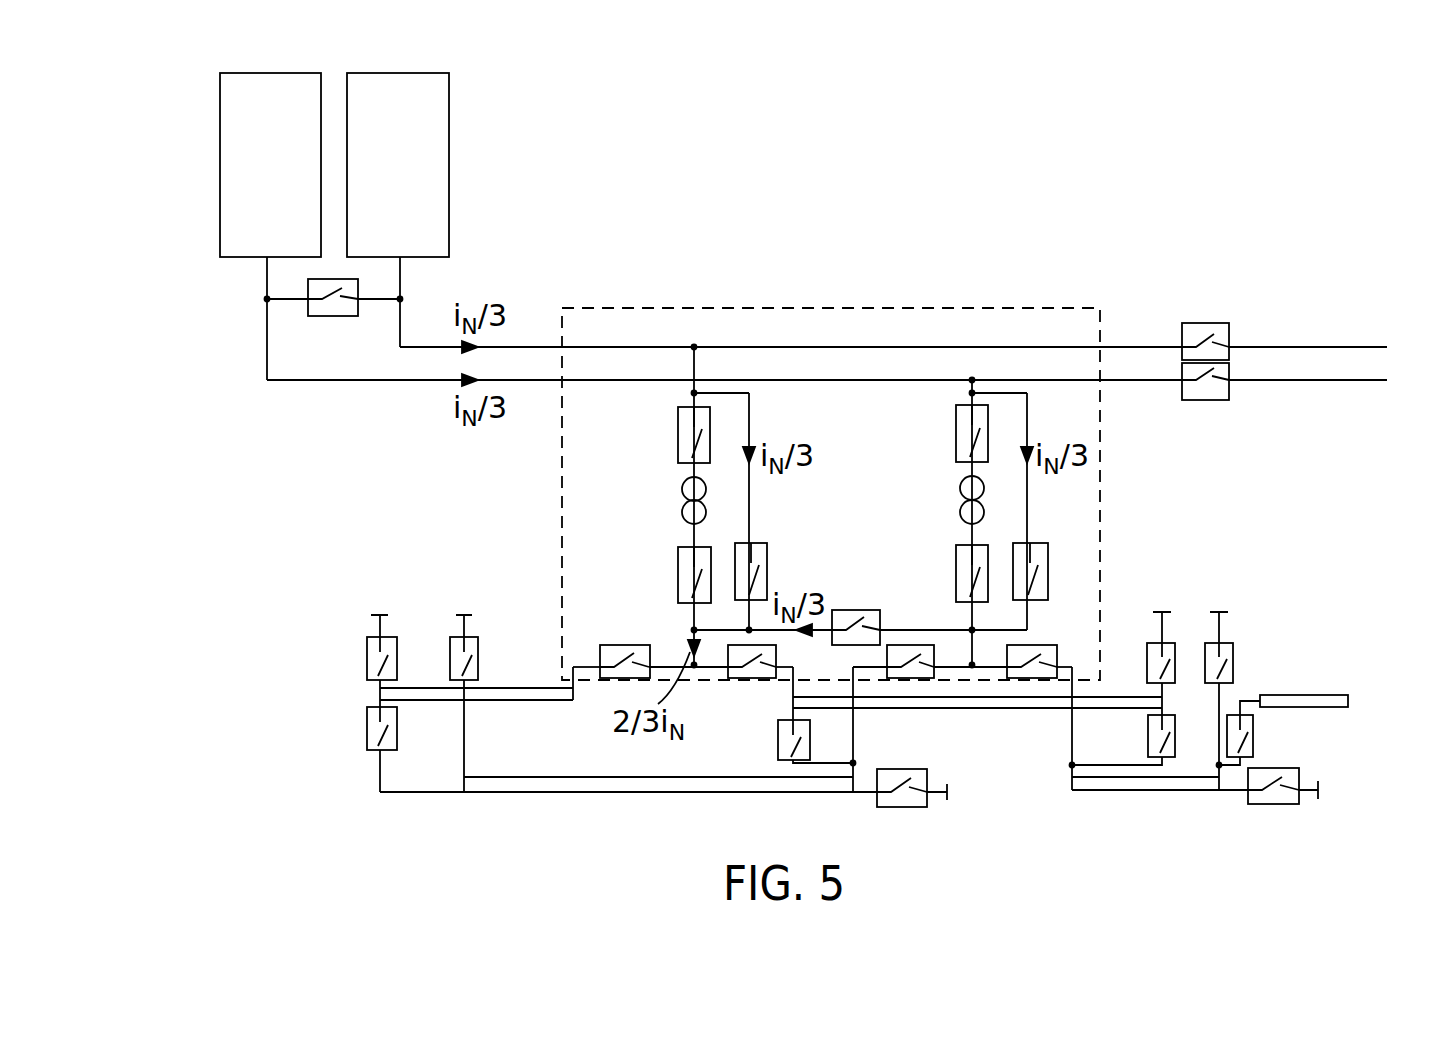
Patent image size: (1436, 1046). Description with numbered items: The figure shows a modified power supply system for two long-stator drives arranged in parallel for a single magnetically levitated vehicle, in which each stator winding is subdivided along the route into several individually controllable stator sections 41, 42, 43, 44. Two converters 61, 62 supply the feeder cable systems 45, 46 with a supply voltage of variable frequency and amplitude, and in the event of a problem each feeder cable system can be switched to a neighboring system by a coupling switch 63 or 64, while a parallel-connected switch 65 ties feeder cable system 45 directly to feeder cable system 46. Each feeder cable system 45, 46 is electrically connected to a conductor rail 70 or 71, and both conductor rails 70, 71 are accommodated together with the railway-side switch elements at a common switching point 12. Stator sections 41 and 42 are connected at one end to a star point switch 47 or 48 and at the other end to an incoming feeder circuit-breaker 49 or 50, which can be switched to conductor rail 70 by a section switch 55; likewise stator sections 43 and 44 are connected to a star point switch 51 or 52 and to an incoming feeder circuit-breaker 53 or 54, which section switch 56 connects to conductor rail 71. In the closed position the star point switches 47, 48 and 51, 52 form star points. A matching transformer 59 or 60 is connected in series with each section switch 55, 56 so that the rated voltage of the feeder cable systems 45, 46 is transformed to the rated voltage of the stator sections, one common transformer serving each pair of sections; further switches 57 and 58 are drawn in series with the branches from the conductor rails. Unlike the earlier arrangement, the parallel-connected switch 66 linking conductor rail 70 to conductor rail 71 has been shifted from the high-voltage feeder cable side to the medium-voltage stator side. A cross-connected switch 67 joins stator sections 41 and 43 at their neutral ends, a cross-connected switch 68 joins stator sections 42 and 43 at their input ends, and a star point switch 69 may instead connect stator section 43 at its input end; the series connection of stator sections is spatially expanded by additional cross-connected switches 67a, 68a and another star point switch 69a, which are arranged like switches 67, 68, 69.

The common switching point 12 is at (1100, 450).
The stator section 41 is at (528, 688).
The stator section 42 is at (1120, 696).
The stator section 43 is at (552, 792).
The stator section 44 is at (1127, 791).
The feeder cable system 45 is at (1123, 346).
The feeder cable system 46 is at (313, 383).
The star point switch 47 is at (370, 662).
The star point switch 48 is at (1157, 655).
The incoming feeder circuit-breaker 49 is at (647, 645).
The incoming feeder circuit-breaker 50 is at (766, 657).
The star point switch 51 is at (464, 648).
The star point switch 52 is at (1217, 655).
The incoming feeder circuit-breaker 53 is at (915, 652).
The incoming feeder circuit-breaker 54 is at (1028, 650).
The section switch 55 is at (688, 573).
The section switch 56 is at (960, 573).
The switch 57 is at (760, 555).
The switch 58 is at (1036, 555).
The matching transformer 59 is at (684, 489).
The matching transformer 60 is at (960, 489).
The converter 61 is at (438, 163).
The converter 62 is at (263, 87).
The coupling switch 63 is at (1203, 333).
The coupling switch 64 is at (1210, 375).
The parallel-connected switch 65 is at (335, 305).
The parallel-connected switch 66 is at (851, 614).
The cross-connected switch 67 is at (371, 735).
The cross-connected switch 67a is at (1150, 750).
The cross-connected switch 68 is at (785, 737).
The cross-connected switch 68a is at (1250, 745).
The star point switch 69 is at (910, 800).
The star point switch 69a is at (1280, 802).
The conductor rail 70 is at (858, 347).
The conductor rail 71 is at (1052, 382).